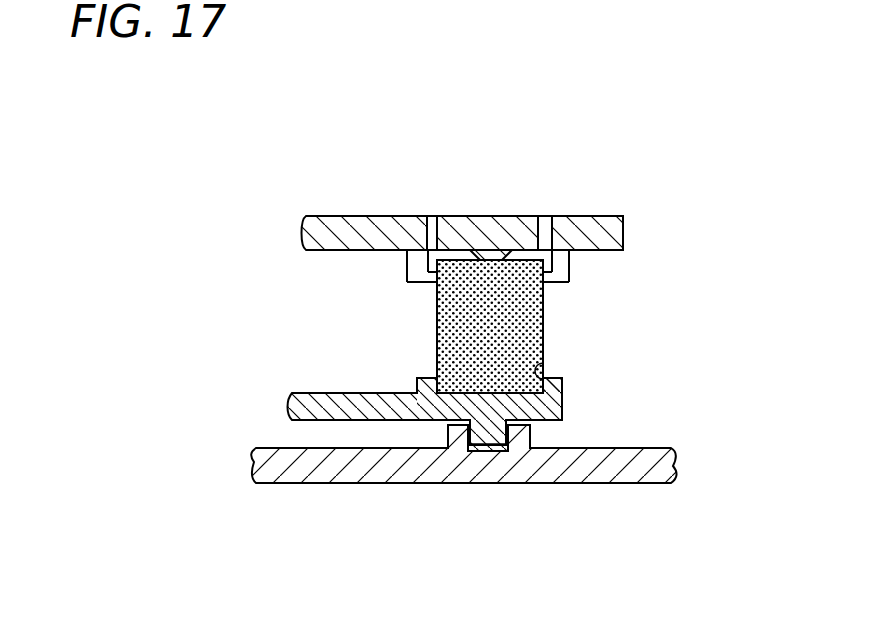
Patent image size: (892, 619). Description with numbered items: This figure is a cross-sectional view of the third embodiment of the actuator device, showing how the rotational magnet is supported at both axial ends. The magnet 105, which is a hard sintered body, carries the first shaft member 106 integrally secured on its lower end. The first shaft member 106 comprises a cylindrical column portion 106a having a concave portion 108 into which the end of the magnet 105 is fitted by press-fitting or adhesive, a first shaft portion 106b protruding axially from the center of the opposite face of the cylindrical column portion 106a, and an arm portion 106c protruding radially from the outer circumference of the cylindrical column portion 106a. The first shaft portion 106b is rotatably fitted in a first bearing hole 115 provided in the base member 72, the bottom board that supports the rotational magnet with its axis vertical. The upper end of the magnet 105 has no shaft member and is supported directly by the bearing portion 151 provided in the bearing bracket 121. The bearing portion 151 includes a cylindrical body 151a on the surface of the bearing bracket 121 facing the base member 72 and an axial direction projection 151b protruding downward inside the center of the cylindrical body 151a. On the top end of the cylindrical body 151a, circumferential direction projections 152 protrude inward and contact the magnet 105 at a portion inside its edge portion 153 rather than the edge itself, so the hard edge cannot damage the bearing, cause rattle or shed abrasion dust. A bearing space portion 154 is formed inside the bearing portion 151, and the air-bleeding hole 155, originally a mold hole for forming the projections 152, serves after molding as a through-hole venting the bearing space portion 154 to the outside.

The bearing bracket 121 is at (315, 216).
The air-bleeding hole 155 is at (430, 216).
The edge portion 153 is at (410, 216).
The axial direction projection 151b is at (493, 216).
The bearing portion 151 is at (471, 246).
The bearing space portion 154 is at (563, 256).
The cylindrical body 151a is at (573, 273).
The circumferential direction projection 152 is at (423, 282).
The magnet 105 is at (440, 346).
The concave portion 108 is at (548, 362).
The first shaft member 106 is at (420, 469).
The cylindrical column portion 106a is at (563, 390).
The first shaft portion 106b is at (500, 452).
The arm portion 106c is at (303, 402).
The first bearing hole 115 is at (481, 452).
The base member 72 is at (282, 468).